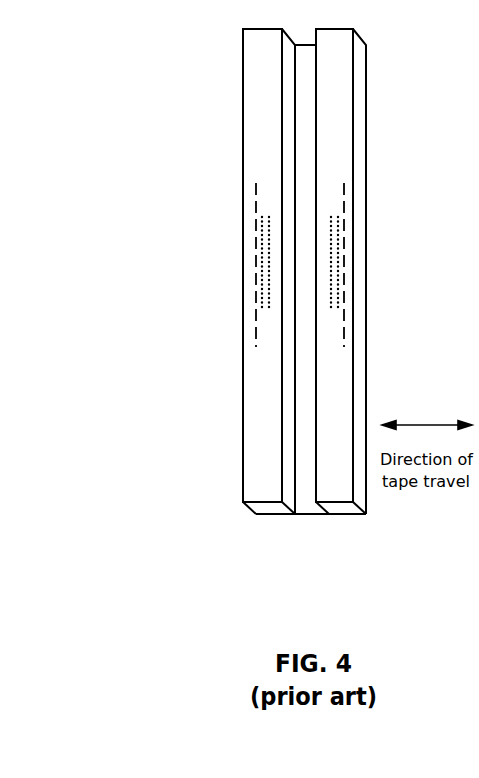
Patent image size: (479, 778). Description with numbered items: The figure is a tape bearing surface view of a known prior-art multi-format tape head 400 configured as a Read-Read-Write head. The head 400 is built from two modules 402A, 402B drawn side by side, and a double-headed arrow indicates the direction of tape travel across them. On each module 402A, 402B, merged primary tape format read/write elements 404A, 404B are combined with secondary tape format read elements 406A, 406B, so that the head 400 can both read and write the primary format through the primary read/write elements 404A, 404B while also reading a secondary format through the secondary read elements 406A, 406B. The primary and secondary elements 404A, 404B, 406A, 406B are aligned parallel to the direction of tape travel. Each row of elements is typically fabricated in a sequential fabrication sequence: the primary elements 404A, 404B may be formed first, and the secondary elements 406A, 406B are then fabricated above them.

The multi-format tape head 400 is at (178, 106).
The module 402A is at (263, 509).
The module 402B is at (340, 509).
The primary tape format read/write elements 404A is at (247, 214).
The primary tape format read/write elements 404B is at (353, 214).
The secondary tape format read elements 406A is at (258, 270).
The secondary tape format read elements 406B is at (341, 270).